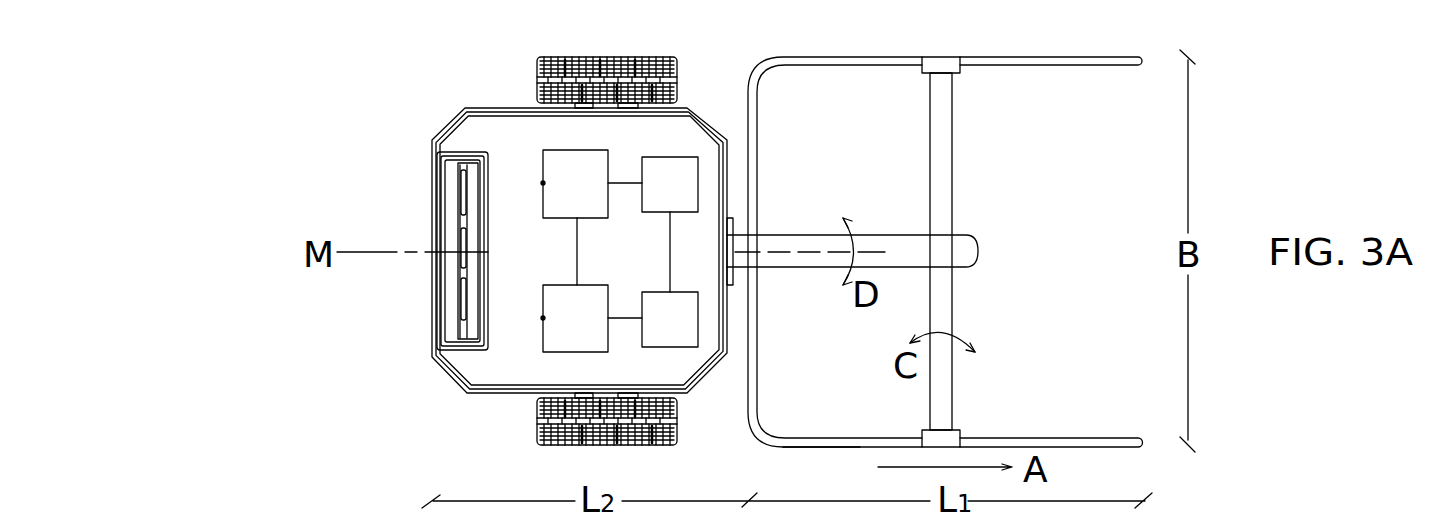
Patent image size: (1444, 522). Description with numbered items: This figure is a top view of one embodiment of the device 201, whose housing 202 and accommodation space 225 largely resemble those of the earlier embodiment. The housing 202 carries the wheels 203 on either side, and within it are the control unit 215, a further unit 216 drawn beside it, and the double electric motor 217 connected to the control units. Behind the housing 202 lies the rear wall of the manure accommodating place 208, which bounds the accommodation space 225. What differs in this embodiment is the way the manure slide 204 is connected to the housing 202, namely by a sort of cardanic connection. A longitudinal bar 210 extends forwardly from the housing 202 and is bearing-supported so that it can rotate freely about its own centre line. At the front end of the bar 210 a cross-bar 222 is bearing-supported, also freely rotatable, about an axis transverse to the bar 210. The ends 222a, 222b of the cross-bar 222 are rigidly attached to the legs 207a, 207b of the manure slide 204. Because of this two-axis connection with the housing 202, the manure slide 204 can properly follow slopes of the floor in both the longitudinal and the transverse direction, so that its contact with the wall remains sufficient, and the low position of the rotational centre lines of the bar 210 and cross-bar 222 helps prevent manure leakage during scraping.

The device 201 is at (432, 394).
The housing 202 is at (658, 267).
The wheels 203 is at (543, 80).
The manure slide 204 is at (812, 442).
The leg of the manure slide 207a is at (1093, 442).
The leg of the manure slide 207b is at (1093, 61).
The rear wall of manure accommodating place 208 is at (752, 328).
The longitudinal bar 210 is at (892, 247).
The control unit 215 is at (697, 198).
The sensor module 216 is at (697, 333).
The double electric motor 217 is at (543, 183).
The cross-bar 222 is at (942, 383).
The end of the cross-bar 222a is at (943, 438).
The end of the cross-bar 222b is at (943, 63).
The accommodation space 225 is at (863, 407).